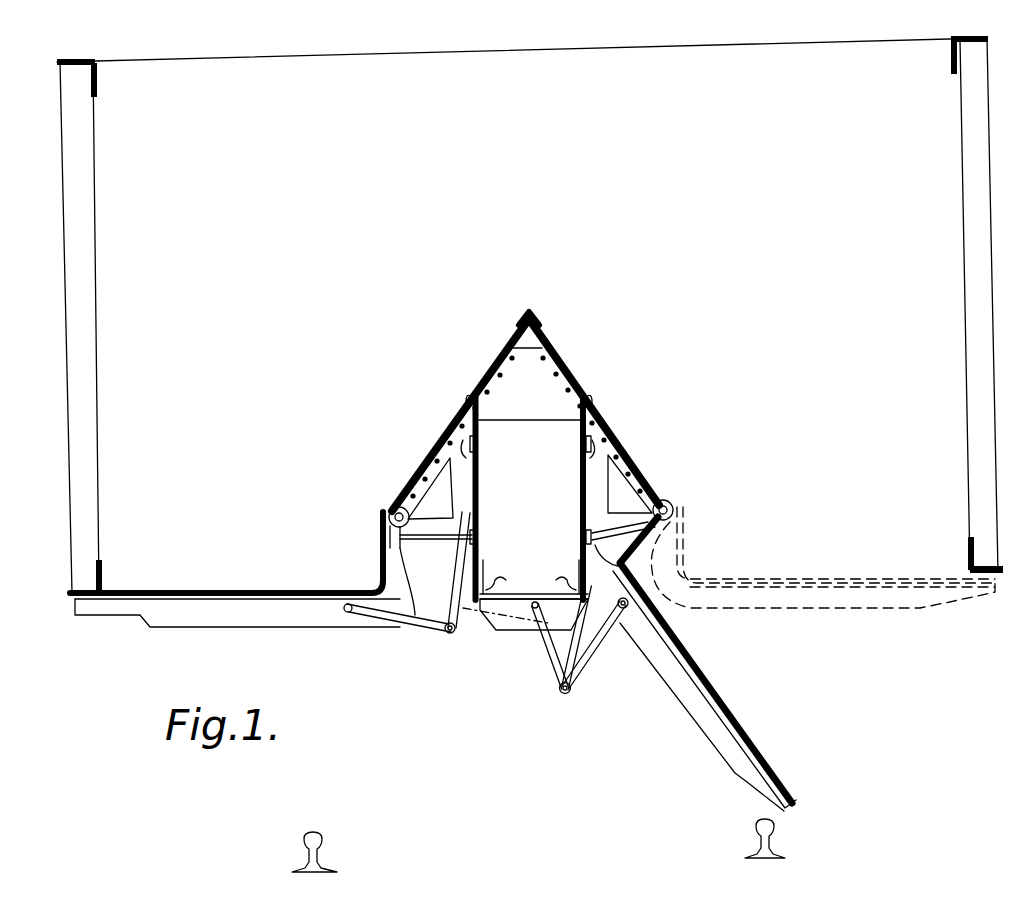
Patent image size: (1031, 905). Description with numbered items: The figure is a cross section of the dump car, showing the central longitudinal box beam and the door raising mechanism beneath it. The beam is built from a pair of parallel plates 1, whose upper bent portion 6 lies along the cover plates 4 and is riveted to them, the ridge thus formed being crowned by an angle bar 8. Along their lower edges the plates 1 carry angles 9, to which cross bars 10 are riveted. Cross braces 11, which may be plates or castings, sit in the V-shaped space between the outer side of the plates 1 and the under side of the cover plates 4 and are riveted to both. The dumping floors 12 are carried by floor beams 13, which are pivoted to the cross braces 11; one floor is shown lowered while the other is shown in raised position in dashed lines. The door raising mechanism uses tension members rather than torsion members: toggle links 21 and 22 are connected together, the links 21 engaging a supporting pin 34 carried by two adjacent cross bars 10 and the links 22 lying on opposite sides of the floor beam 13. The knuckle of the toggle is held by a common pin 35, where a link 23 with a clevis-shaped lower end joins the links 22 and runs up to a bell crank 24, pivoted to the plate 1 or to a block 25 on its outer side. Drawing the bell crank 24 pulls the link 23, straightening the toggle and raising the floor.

The parallel plates 1 is at (479, 480).
The cover plates 4 is at (479, 396).
The upper bent portion 6 is at (556, 362).
The angle bar 8 is at (540, 331).
The angles 9 is at (496, 585).
The cross bars 10 is at (525, 614).
The cross braces 11 is at (644, 448).
The dumping floors 12 is at (727, 709).
The floor beams 13 is at (535, 659).
The toggle links 21 is at (554, 662).
The toggle links 22 is at (604, 653).
The link 23 is at (585, 636).
The bell crank 24 is at (581, 507).
The block 25 is at (530, 544).
The supporting pin 34 is at (534, 588).
The common pin 35 is at (570, 691).